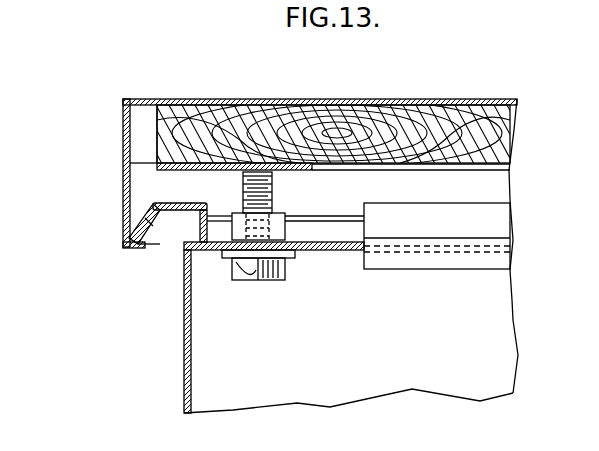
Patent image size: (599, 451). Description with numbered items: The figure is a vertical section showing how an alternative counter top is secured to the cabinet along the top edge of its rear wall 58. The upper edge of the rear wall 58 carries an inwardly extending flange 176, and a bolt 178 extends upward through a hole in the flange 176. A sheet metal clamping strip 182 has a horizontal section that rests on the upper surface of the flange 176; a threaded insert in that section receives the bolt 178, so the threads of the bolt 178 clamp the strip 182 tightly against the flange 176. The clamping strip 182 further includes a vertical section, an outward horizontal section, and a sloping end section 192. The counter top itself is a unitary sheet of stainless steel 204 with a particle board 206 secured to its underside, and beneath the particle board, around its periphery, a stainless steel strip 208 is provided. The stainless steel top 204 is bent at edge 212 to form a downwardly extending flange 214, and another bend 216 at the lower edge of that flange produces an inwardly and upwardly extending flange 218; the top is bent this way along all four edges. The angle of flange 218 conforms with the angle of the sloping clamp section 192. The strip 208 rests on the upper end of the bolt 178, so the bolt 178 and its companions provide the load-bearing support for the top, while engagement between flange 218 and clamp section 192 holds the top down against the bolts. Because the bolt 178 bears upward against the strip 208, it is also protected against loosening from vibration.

The rear wall 58 is at (185, 357).
The flange 176 is at (346, 254).
The bolt 178 is at (275, 185).
The clamping strip 182 is at (232, 200).
The sloping end section 192 is at (140, 227).
The sheet of stainless steel 204 is at (280, 78).
The particle board 206 is at (407, 133).
The stainless steel strip 208 is at (160, 174).
The edge 212 is at (122, 100).
The downwardly extending flange 214 is at (122, 138).
The bend 216 is at (130, 247).
The inwardly and upwardly extending flange 218 is at (155, 240).